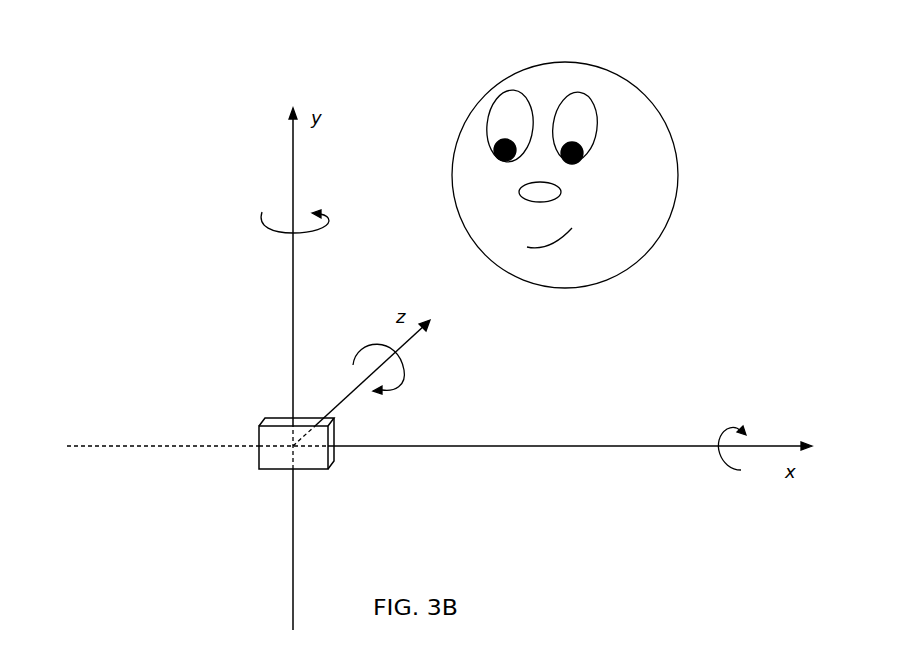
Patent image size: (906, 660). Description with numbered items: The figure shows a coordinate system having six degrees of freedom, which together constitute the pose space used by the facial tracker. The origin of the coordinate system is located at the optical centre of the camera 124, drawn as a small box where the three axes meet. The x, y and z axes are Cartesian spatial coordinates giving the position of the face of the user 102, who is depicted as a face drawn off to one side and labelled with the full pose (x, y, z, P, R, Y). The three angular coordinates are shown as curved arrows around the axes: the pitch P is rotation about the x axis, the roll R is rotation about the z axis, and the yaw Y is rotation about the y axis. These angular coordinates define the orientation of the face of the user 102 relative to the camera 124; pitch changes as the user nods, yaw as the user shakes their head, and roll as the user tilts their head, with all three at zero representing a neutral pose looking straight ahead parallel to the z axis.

The user 102 is at (681, 83).
The camera 124 is at (270, 470).
The pitch P is at (736, 440).
The roll R is at (378, 383).
The yaw Y is at (301, 209).